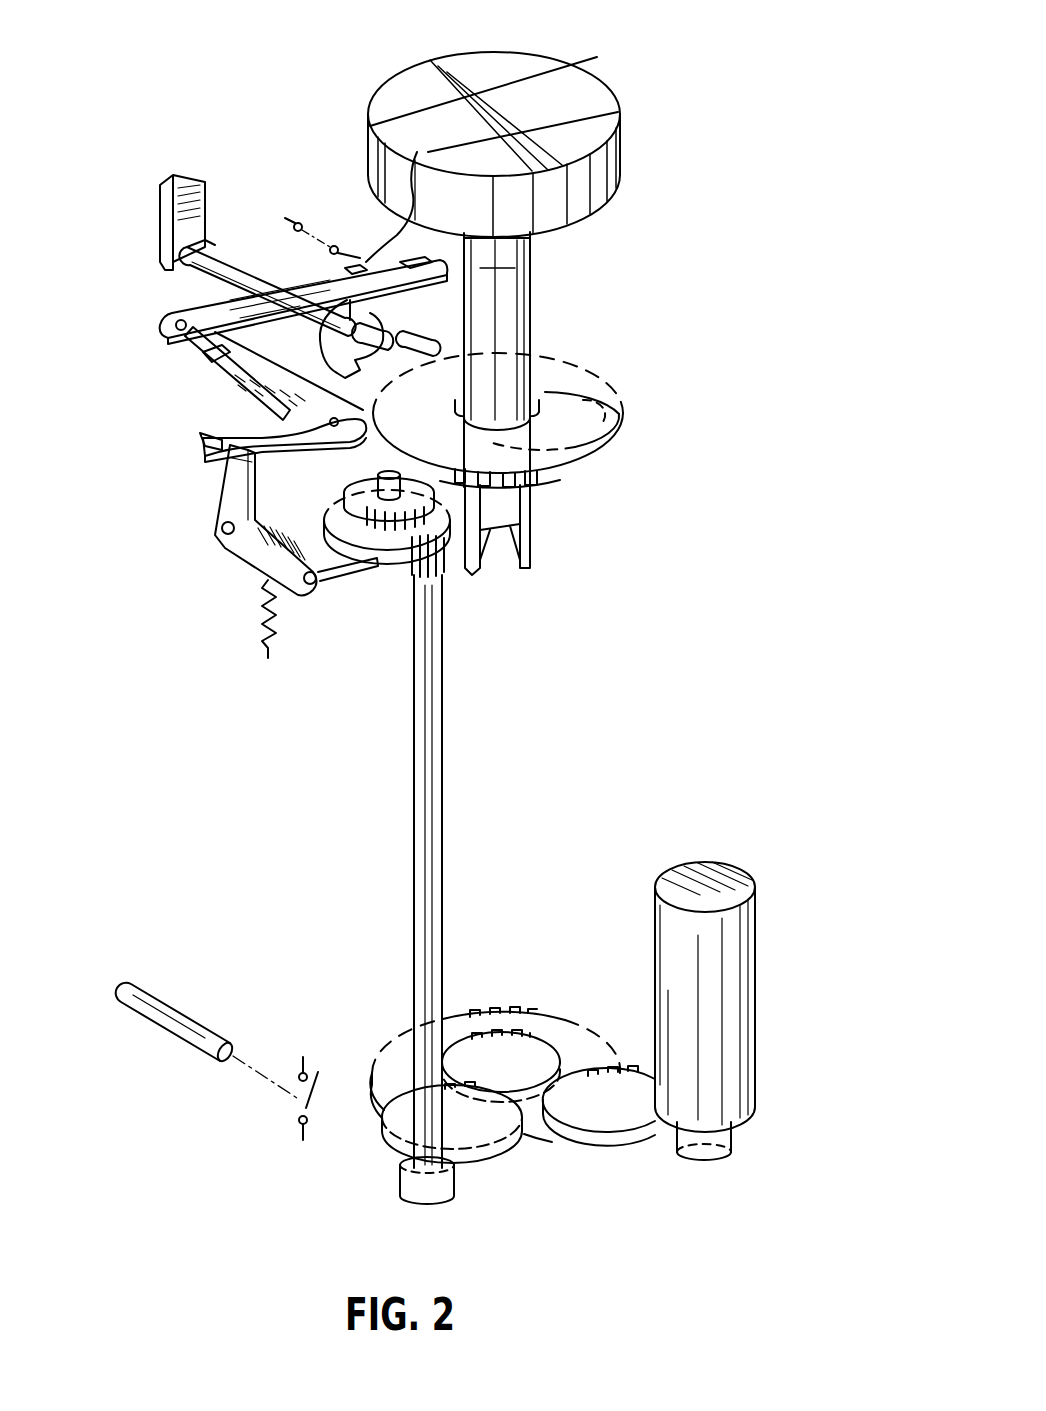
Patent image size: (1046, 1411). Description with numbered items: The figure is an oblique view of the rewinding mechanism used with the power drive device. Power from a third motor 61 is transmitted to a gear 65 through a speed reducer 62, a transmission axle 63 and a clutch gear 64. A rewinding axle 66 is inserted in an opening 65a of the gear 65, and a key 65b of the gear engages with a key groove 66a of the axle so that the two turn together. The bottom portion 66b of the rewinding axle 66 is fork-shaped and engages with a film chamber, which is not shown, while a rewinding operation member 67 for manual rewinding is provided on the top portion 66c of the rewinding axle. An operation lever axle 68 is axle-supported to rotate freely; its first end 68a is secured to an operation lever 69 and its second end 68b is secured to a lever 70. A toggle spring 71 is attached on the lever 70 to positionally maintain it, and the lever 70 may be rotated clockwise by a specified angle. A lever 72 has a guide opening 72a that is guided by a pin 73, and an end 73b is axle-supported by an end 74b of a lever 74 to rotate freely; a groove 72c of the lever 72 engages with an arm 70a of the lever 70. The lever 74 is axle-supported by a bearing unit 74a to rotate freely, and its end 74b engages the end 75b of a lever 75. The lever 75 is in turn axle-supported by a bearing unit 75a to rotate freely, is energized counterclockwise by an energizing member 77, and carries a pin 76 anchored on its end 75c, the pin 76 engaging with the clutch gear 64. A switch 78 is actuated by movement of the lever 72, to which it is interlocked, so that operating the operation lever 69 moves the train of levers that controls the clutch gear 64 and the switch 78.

The third motor 61 is at (735, 990).
The speed reducer 62 is at (742, 1207).
The transmission axle 63 is at (445, 852).
The clutch gear 64 is at (402, 587).
The gear 65 is at (615, 374).
The opening 65a is at (545, 392).
The key 65b is at (600, 450).
The rewinding axle 66 is at (500, 325).
The key groove 66a is at (512, 395).
The bottom portion 66b is at (530, 565).
The top portion 66c is at (502, 253).
The rewinding operation member 67 is at (583, 83).
The operation lever axle 68 is at (178, 270).
The first end 68a is at (198, 243).
The second end 68b is at (215, 378).
The operation lever 69 is at (172, 177).
The lever 70 is at (377, 387).
The arm 70a is at (353, 267).
The toggle spring 71 is at (427, 293).
The lever 72 is at (217, 310).
The guide opening 72a is at (407, 258).
The groove 72c is at (407, 190).
The pin 73 is at (500, 268).
The end 73b is at (178, 313).
The lever 74 is at (238, 402).
The bearing unit 74a is at (338, 422).
The end 74b is at (205, 355).
The lever 75 is at (225, 555).
The bearing unit 75a is at (222, 529).
The end 75b is at (232, 465).
The end 75c is at (267, 580).
The pin 76 is at (343, 578).
The energizing member 77 is at (262, 630).
The switch 78 is at (297, 223).